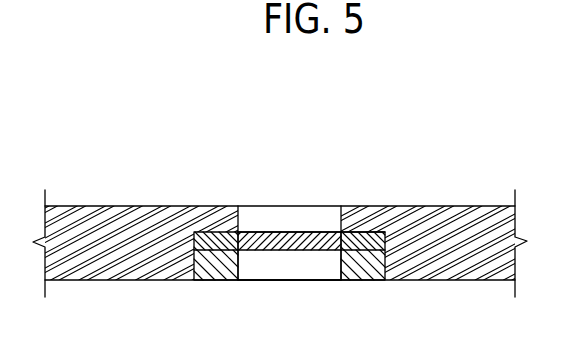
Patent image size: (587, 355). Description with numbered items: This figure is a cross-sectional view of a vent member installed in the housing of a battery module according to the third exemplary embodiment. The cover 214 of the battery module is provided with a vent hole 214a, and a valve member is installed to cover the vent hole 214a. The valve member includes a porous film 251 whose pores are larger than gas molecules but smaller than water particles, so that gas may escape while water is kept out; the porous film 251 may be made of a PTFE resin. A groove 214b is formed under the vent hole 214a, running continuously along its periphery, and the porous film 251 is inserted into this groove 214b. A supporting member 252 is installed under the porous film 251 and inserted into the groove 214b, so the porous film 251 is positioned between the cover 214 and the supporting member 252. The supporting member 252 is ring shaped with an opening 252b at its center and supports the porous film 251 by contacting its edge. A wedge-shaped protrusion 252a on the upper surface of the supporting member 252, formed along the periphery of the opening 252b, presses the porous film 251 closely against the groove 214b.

The cover 214 is at (435, 223).
The vent hole 214a is at (291, 207).
The groove 214b is at (372, 235).
The porous film 251 is at (211, 241).
The supporting member 252 is at (220, 265).
The protrusion 252a is at (259, 242).
The opening 252b is at (308, 258).